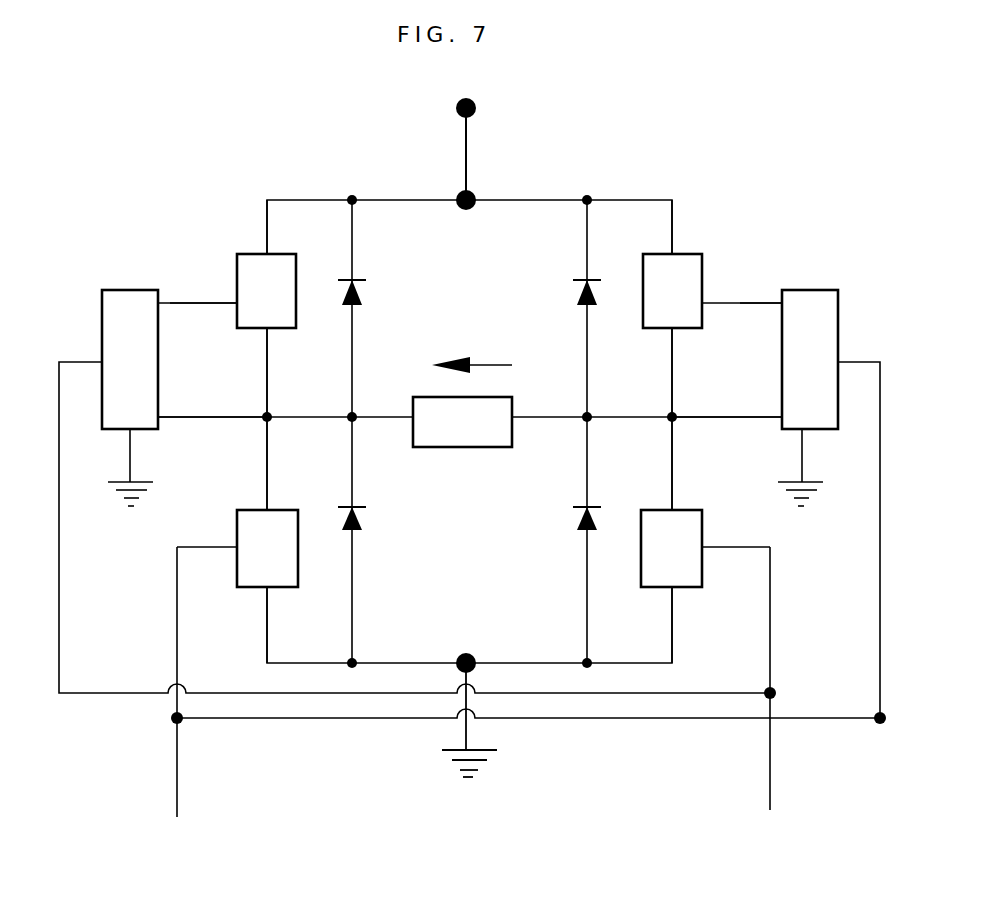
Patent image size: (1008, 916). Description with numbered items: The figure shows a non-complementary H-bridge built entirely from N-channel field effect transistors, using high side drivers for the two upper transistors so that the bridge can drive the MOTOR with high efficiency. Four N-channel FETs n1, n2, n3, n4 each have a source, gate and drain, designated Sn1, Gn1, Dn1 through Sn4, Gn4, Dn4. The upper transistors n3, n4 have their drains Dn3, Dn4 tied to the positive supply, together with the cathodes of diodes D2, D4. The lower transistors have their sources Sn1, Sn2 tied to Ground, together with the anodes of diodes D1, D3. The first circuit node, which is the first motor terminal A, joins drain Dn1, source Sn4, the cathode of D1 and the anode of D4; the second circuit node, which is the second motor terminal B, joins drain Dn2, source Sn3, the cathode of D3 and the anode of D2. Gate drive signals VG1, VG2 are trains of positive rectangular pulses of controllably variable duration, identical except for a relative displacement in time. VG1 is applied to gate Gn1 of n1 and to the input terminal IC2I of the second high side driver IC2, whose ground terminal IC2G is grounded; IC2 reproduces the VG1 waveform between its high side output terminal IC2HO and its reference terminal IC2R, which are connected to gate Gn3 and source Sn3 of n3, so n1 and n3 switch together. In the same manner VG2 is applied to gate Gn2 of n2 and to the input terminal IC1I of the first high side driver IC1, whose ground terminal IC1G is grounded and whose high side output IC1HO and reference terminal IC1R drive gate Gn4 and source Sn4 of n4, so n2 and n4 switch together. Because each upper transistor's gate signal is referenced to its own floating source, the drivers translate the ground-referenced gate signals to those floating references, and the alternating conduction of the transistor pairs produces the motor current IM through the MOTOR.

The first integrated circuit high side driver IC1 is at (130, 359).
The second integrated circuit high side driver IC2 is at (810, 359).
The first N-channel field effect transistor n1 is at (267, 548).
The second N-channel field effect transistor n2 is at (671, 548).
The third N-channel field effect transistor n3 is at (672, 291).
The fourth N-channel field effect transistor n4 is at (266, 291).
The first diode D1 is at (365, 519).
The second diode D2 is at (575, 293).
The third diode D3 is at (575, 517).
The fourth diode D4 is at (369, 295).
The motor MOTOR is at (462, 422).
The motor current IM is at (489, 357).
The first motor terminal A is at (401, 400).
The second motor terminal B is at (528, 400).
The ground Ground is at (512, 720).
The first gate drive signal VG1 is at (518, 698).
The second gate drive signal VG2 is at (765, 696).
The gate terminal of n1 Gn1 is at (229, 546).
The gate terminal of n2 Gn2 is at (707, 541).
The gate terminal of n3 Gn3 is at (708, 298).
The gate terminal of n4 Gn4 is at (229, 298).
The drain terminal of n1 Dn1 is at (273, 503).
The drain terminal of n2 Dn2 is at (657, 503).
The drain terminal of n3 Dn3 is at (659, 251).
The drain terminal of n4 Dn4 is at (273, 249).
The source terminal of n1 Sn1 is at (277, 597).
The source terminal of n2 Sn2 is at (663, 597).
The source terminal of n3 Sn3 is at (665, 338).
The source terminal of n4 Sn4 is at (273, 337).
The high side output terminal of IC1 IC1HO is at (165, 294).
The high side reference terminal of IC1 IC1R is at (167, 412).
The input terminal of IC1 IC1I is at (95, 353).
The ground terminal of IC1 IC1G is at (123, 436).
The high side output terminal of IC2 IC2HO is at (770, 293).
The high side reference terminal of IC2 IC2R is at (770, 407).
The input terminal of IC2 IC2I is at (850, 352).
The ground terminal of IC2 IC2G is at (810, 440).